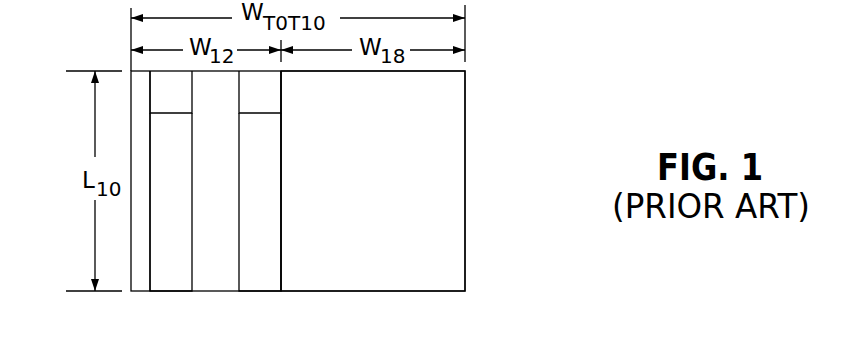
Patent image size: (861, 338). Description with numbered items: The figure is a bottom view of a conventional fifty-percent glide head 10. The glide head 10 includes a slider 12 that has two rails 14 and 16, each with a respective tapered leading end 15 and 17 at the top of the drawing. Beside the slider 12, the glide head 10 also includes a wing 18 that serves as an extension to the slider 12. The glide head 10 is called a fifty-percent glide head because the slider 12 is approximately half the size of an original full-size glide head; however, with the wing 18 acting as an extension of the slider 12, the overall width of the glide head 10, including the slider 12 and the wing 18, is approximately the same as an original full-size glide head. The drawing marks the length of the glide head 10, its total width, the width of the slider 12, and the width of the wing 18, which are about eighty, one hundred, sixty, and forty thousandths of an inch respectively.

The glide head 10 is at (483, 81).
The slider 12 is at (125, 62).
The rail 14 is at (177, 207).
The tapered leading end 15 is at (177, 98).
The rail 16 is at (268, 207).
The tapered leading end 17 is at (268, 98).
The wing 18 is at (396, 173).